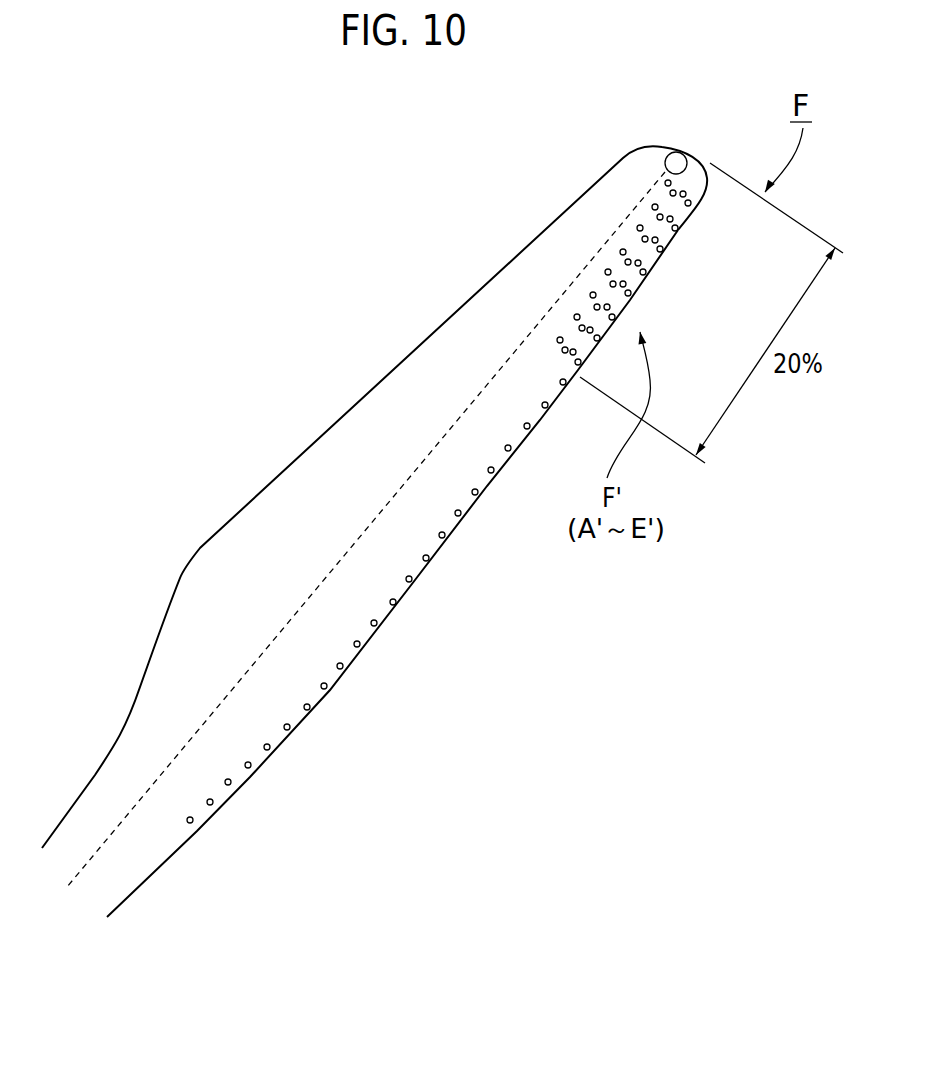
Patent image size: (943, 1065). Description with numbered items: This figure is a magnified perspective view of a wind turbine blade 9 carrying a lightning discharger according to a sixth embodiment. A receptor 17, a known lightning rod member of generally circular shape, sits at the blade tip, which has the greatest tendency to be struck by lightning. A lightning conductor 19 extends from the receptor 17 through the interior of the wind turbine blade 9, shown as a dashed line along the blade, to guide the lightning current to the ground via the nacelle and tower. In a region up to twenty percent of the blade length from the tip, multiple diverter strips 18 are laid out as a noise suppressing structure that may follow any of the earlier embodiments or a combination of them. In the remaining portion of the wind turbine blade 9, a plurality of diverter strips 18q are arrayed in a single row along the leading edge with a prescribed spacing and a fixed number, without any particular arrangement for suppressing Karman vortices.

The wind turbine blade 9 is at (332, 414).
The receptor 17 is at (676, 163).
The diverter strips 18 is at (658, 240).
The diverter strips 18q is at (394, 606).
The lightning conductor 19 is at (572, 283).